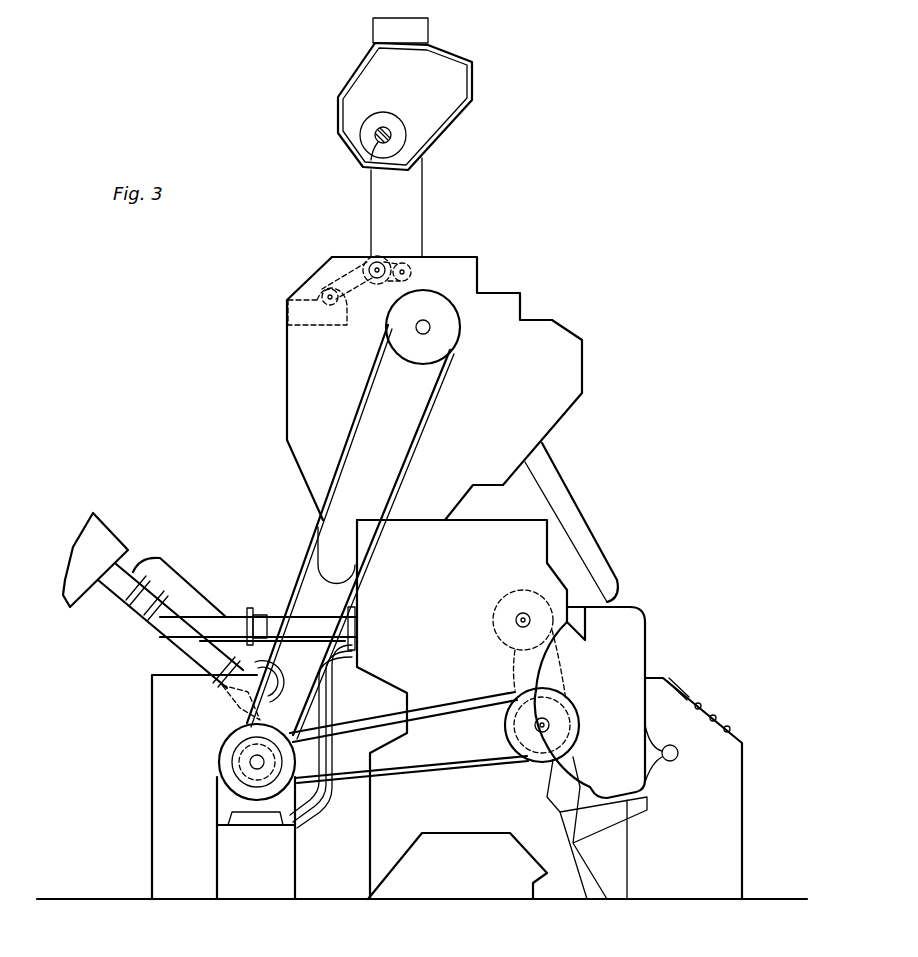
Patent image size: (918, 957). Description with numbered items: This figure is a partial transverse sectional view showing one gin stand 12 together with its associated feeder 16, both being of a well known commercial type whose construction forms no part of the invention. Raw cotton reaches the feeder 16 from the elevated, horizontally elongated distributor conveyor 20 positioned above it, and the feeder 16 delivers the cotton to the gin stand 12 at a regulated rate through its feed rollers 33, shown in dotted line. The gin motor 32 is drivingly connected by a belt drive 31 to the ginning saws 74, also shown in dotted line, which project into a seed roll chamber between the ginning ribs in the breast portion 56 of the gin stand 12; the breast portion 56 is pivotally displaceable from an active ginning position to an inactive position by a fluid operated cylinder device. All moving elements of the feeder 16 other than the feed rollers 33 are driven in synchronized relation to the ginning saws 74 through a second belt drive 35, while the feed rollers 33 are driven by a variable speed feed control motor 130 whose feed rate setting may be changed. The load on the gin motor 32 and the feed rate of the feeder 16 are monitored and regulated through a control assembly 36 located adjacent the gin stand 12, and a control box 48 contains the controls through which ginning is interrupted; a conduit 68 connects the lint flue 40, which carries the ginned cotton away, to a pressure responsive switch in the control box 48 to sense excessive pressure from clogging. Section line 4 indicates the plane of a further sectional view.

The section line 4- 4 is at (702, 676).
The gin stand 12 is at (556, 538).
The feeder 16 is at (281, 360).
The distributor conveyor 20 is at (467, 62).
The belt drive 31 is at (495, 770).
The gin motor 32 is at (225, 748).
The feed rollers 33 is at (413, 271).
The belt drive 35 is at (357, 417).
The control assembly 36 is at (749, 813).
The lint flue 40 is at (98, 542).
The control box 48 is at (140, 732).
The breast portion 56 is at (633, 633).
The conduit 68 is at (200, 590).
The ginning saws 74 is at (513, 651).
The feed control motor 130 is at (300, 292).